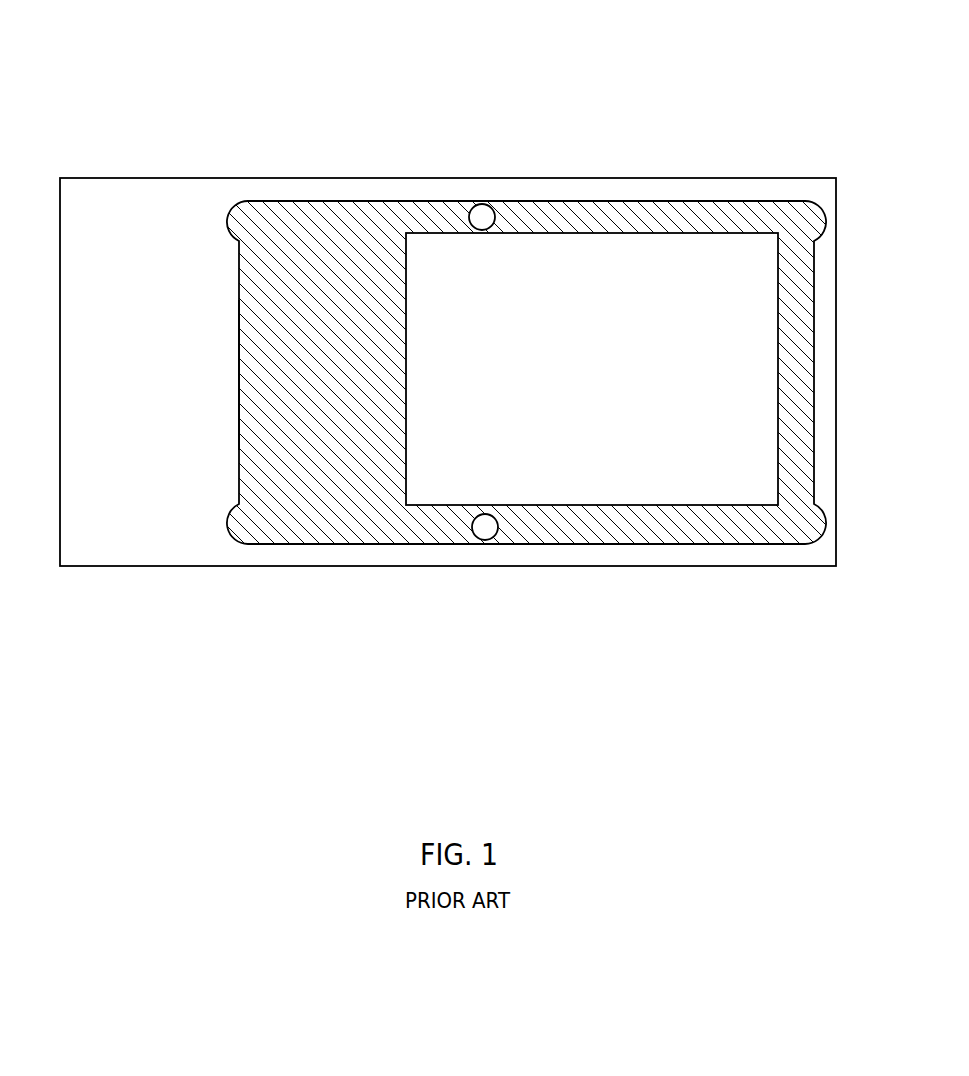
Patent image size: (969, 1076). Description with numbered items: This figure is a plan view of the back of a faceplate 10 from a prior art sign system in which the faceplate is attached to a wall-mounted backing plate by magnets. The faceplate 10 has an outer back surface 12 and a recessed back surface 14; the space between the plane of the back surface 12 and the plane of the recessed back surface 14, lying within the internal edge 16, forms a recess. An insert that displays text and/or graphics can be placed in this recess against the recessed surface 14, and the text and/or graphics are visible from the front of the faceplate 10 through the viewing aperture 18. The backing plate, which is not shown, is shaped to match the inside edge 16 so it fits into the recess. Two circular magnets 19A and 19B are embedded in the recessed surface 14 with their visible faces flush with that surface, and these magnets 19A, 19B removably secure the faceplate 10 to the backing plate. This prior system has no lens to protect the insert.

The faceplate 10 is at (472, 118).
The back surface 12 is at (158, 217).
The recessed back surface 14 is at (320, 380).
The internal edge 16 is at (239, 373).
The viewing aperture 18 is at (623, 348).
The circular magnet 19A is at (483, 215).
The circular magnet 19B is at (483, 531).